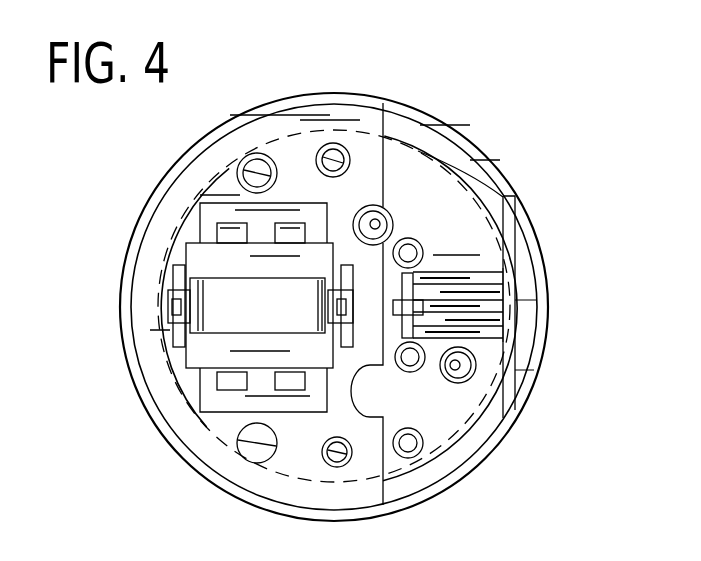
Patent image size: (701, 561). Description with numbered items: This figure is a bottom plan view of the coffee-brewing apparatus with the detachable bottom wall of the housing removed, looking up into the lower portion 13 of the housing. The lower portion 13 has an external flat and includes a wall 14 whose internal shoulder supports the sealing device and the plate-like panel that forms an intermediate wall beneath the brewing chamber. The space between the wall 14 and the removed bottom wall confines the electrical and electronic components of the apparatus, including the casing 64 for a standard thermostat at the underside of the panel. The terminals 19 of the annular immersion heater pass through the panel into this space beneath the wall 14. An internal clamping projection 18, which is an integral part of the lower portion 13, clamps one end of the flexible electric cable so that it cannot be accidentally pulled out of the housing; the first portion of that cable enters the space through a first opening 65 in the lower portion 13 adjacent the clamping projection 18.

The lower portion of the housing 13 is at (513, 260).
The wall 14 is at (522, 237).
The clamping projection 18 is at (438, 317).
The terminals 19 is at (380, 227).
The casing 64 is at (267, 315).
The first opening 65 is at (512, 307).